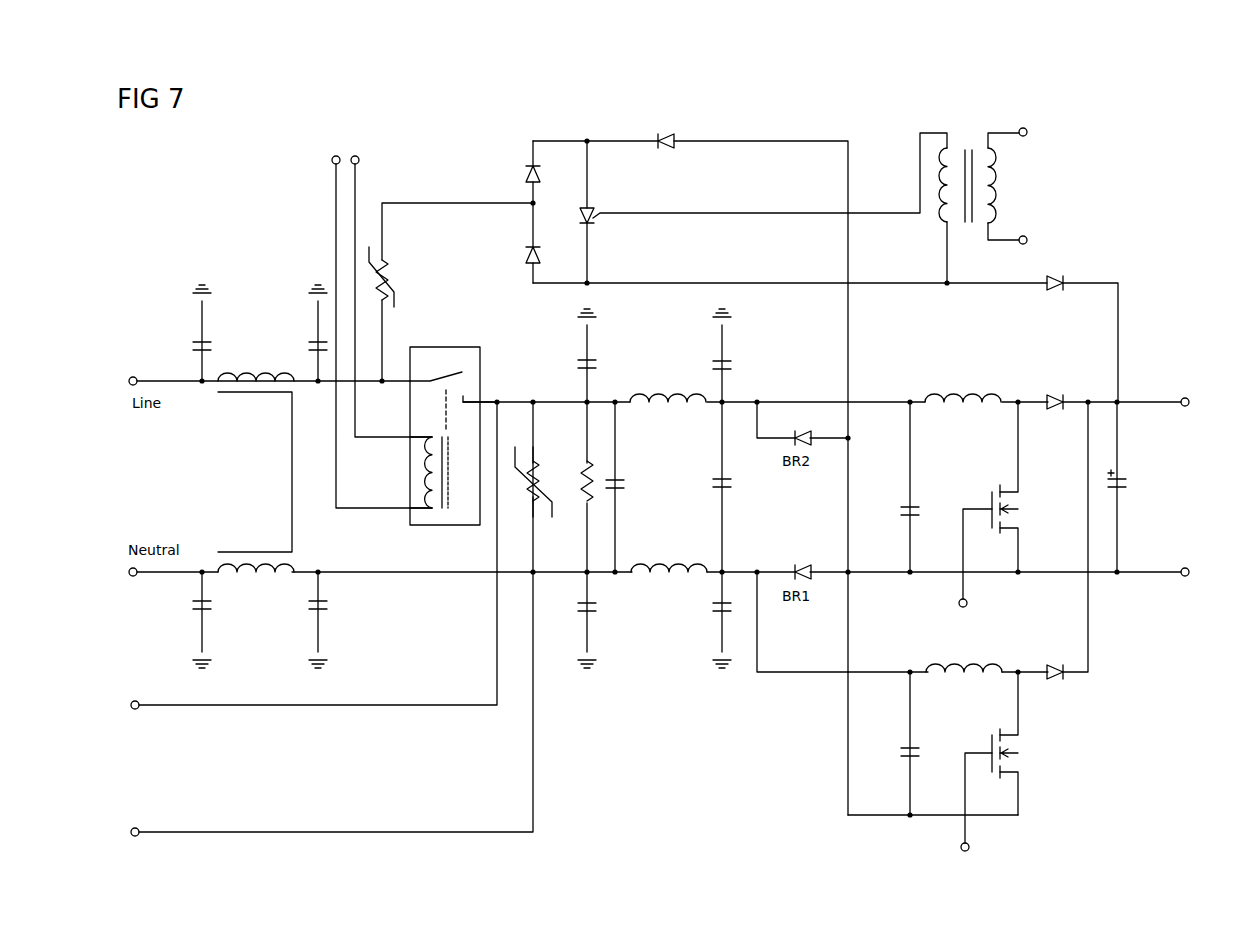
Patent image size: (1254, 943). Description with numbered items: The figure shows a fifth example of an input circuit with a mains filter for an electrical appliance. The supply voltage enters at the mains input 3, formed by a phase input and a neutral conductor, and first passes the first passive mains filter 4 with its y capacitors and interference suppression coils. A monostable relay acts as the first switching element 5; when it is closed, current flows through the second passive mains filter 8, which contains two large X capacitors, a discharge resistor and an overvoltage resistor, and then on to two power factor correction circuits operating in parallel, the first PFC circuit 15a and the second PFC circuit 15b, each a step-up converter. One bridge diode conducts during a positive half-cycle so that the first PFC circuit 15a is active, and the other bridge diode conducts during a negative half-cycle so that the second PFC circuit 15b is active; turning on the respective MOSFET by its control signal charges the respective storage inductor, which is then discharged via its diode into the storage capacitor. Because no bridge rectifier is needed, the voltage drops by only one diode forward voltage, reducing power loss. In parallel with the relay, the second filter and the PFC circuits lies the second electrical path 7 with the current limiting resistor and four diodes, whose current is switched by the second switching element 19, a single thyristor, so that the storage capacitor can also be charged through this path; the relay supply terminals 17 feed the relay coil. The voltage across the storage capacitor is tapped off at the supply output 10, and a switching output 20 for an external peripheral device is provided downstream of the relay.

The mains input 3 is at (125, 468).
The first passive mains filter 4 is at (407, 600).
The first switching element 5 is at (492, 313).
The second electrical path 7 is at (468, 177).
The second passive mains filter 8 is at (628, 700).
The supply output 10 is at (1188, 468).
The first PFC circuit 15a is at (942, 600).
The second PFC circuit 15b is at (808, 740).
The relay supply terminals 17 is at (330, 160).
The second switching element 19 is at (552, 123).
The switching output 20 is at (147, 775).